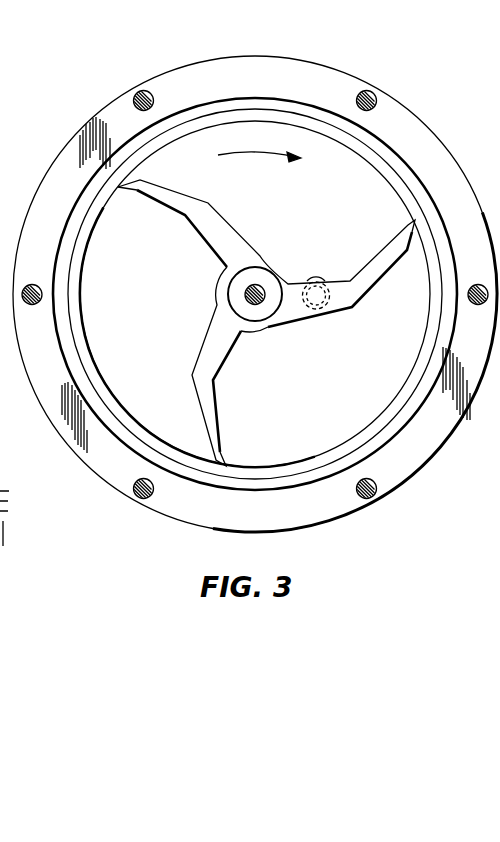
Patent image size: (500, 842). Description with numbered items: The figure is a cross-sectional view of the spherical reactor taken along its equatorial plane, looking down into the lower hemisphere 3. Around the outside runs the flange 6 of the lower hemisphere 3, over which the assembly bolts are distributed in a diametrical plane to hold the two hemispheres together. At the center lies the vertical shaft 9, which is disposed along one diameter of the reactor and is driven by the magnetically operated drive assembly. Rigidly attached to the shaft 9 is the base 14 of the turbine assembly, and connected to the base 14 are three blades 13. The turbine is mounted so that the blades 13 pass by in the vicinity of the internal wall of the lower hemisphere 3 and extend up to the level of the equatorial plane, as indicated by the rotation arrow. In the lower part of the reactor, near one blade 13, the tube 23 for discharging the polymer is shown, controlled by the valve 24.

The lower hemisphere 3 is at (90, 481).
The flange 6 is at (435, 180).
The shaft 9 is at (243, 297).
The blades 13 is at (218, 229).
The base 14 is at (262, 283).
The tube 23 is at (317, 281).
The valve 24 is at (313, 309).